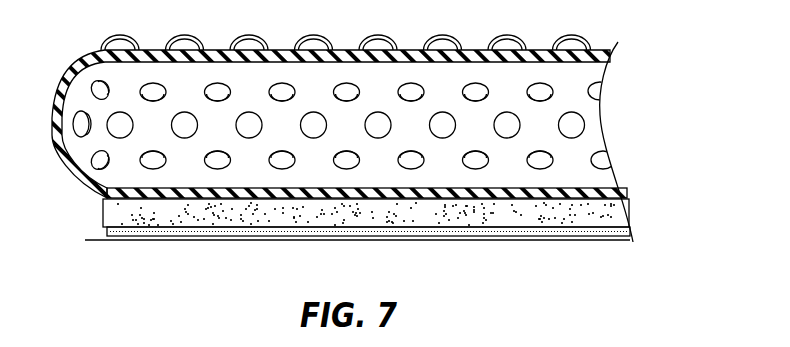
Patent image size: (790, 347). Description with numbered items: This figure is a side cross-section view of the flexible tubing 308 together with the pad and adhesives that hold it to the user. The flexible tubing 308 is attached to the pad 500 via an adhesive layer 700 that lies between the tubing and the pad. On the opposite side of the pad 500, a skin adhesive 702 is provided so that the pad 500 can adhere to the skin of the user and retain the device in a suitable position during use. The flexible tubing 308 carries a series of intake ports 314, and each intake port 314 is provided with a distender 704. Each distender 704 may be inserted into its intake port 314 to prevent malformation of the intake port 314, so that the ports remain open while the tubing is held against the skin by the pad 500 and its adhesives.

The flexible tubing 308 is at (603, 58).
The distender 704 is at (372, 37).
The intake port 314 is at (608, 152).
The adhesive layer 700 is at (627, 199).
The pad 500 is at (187, 226).
The skin adhesive 702 is at (282, 237).